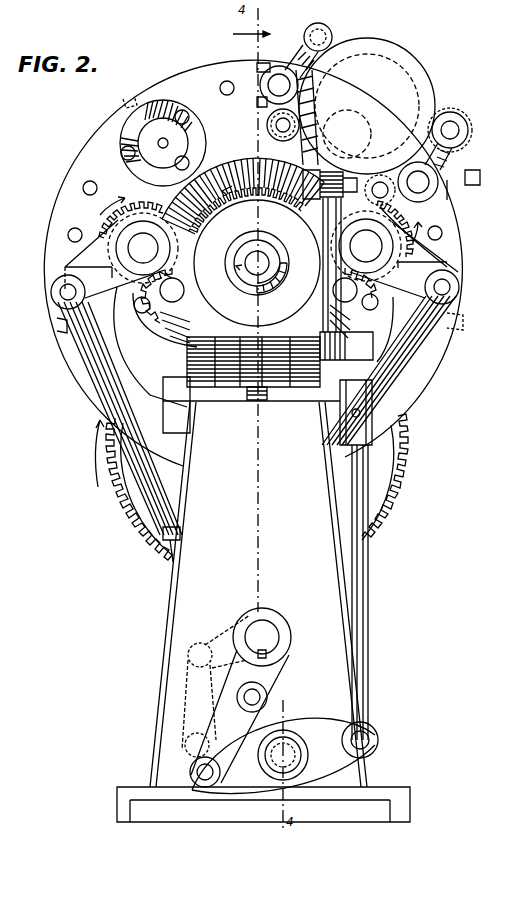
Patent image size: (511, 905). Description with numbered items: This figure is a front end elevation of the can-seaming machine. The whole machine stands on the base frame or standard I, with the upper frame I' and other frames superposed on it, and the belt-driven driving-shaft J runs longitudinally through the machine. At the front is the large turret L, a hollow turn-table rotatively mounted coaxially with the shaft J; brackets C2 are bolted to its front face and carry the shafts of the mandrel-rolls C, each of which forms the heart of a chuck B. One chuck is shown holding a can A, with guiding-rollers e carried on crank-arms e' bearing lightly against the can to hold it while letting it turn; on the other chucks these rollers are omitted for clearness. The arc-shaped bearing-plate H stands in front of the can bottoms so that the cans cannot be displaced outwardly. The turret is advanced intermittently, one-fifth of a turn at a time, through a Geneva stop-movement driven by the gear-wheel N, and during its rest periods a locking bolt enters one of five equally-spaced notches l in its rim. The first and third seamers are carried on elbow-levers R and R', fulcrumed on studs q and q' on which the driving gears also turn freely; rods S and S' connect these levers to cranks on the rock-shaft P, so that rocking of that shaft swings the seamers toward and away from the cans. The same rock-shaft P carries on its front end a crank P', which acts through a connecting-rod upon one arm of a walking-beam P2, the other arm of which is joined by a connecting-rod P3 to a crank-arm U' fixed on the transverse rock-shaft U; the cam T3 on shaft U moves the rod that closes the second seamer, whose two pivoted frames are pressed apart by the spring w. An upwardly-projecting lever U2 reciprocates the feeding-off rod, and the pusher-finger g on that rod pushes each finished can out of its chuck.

The turret L is at (253, 263).
The mandrel-roll C is at (163, 143).
The bracket C2 is at (158, 103).
The can A is at (368, 106).
The chuck B is at (319, 92).
The guiding-roller e is at (452, 148).
The crank-arm e' is at (431, 176).
The pusher-finger g is at (314, 171).
The stud q is at (389, 241).
The stud q' is at (138, 240).
The elbow-lever R is at (425, 263).
The elbow-lever R' is at (84, 264).
The rod S is at (389, 356).
The rod S' is at (120, 432).
The arc-shaped bearing-plate H is at (141, 337).
The rock-shaft U is at (241, 362).
The crank-arm U' is at (332, 279).
The arm or lever U2 is at (330, 236).
The upper frame I' is at (189, 373).
The driving-shaft J is at (274, 272).
The cam T3 is at (256, 402).
The notch l is at (450, 326).
The gear-wheel N is at (395, 465).
The connecting-rod P3 is at (370, 570).
The base frame or standard I is at (263, 611).
The rock-shaft P is at (250, 695).
The crank P' is at (273, 695).
The walking-beam P2 is at (285, 755).
The spring w is at (216, 701).